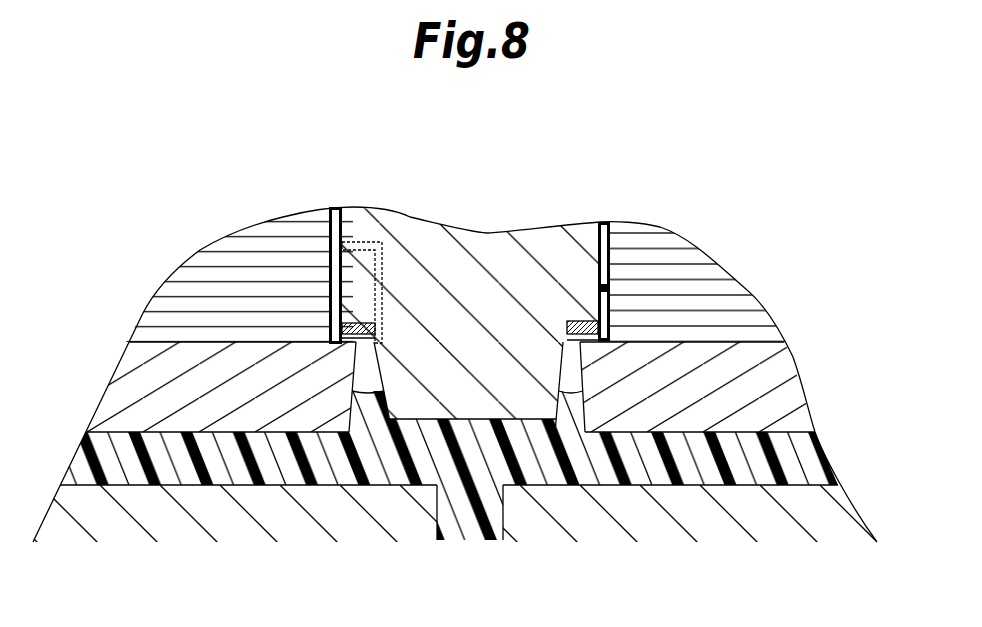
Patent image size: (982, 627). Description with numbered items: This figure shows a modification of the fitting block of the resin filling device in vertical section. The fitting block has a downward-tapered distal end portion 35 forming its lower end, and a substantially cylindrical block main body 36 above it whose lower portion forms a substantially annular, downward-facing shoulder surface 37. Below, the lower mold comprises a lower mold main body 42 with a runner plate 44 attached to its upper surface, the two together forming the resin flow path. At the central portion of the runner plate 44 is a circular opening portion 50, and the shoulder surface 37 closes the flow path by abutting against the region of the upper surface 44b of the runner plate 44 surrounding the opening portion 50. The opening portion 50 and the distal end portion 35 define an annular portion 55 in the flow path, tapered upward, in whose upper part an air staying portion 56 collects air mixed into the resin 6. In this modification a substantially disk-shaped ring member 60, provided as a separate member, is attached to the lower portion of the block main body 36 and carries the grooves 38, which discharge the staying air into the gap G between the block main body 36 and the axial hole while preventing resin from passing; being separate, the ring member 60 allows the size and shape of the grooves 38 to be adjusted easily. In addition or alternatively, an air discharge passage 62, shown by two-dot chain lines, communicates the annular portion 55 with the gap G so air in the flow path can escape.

The resin 6 is at (192, 480).
The distal end portion 35 is at (478, 410).
The block main body 36 is at (610, 260).
The shoulder surface 37 is at (352, 346).
The grooves 38 is at (588, 340).
The lower mold main body 42 is at (803, 497).
The runner plate 44 is at (777, 400).
The upper surface of the runner plate 44b is at (177, 343).
The opening portion 50 is at (590, 400).
The annular portion 55 is at (350, 422).
The air staying portion 56 is at (380, 338).
The ring member 60 is at (600, 324).
The air discharge passage 62 is at (329, 258).
The gap G is at (610, 288).